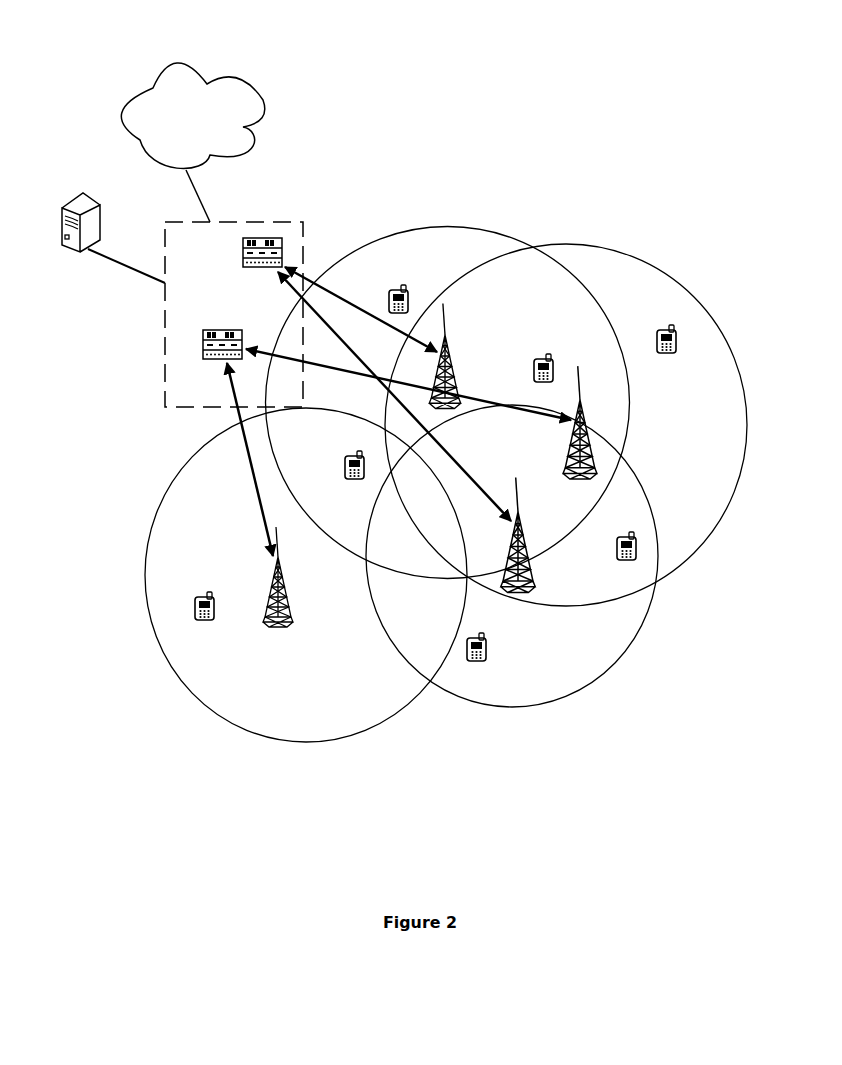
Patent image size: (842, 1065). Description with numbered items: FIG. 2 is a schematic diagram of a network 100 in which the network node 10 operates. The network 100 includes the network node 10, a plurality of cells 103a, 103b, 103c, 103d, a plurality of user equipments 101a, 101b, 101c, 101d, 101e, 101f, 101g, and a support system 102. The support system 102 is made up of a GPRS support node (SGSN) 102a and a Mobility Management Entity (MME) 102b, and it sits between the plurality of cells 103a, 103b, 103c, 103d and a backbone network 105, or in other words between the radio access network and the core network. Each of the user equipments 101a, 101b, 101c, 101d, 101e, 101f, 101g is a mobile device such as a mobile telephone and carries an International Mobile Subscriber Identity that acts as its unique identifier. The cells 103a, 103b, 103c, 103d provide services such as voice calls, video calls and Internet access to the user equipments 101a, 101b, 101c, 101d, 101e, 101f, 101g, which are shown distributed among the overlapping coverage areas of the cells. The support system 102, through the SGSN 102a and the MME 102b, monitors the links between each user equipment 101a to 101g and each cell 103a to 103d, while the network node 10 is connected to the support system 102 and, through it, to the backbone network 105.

The network 100 is at (662, 98).
The backbone network 105 is at (153, 70).
The network node 10 is at (79, 197).
The support system 102 is at (263, 222).
The GPRS support node (SGSN) 102a is at (285, 240).
The Mobility Management Entity (MME) 102b is at (204, 341).
The cell 103a is at (445, 340).
The cell 103b is at (587, 412).
The cell 103c is at (532, 580).
The cell 103d is at (268, 618).
The user equipment 101a is at (401, 285).
The user equipment 101b is at (548, 353).
The user equipment 101c is at (675, 330).
The user equipment 101d is at (636, 553).
The user equipment 101e is at (474, 663).
The user equipment 101f is at (195, 606).
The user equipment 101g is at (345, 460).